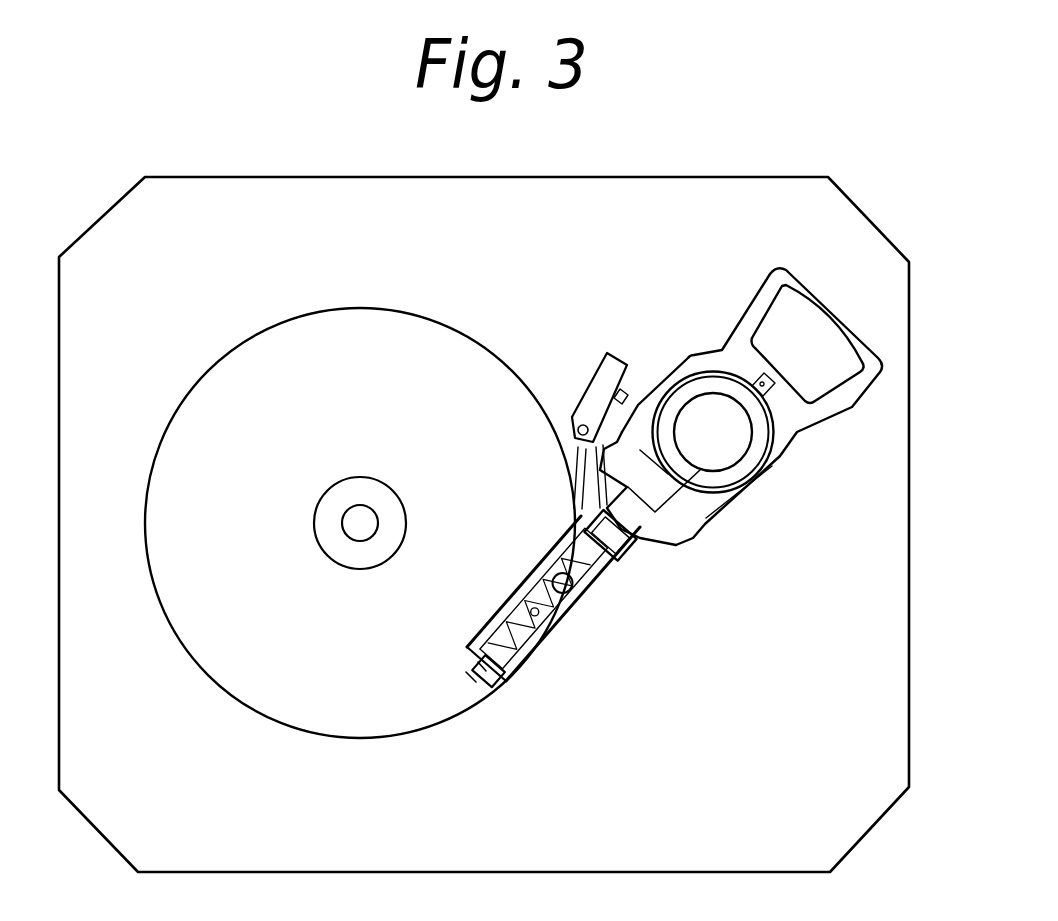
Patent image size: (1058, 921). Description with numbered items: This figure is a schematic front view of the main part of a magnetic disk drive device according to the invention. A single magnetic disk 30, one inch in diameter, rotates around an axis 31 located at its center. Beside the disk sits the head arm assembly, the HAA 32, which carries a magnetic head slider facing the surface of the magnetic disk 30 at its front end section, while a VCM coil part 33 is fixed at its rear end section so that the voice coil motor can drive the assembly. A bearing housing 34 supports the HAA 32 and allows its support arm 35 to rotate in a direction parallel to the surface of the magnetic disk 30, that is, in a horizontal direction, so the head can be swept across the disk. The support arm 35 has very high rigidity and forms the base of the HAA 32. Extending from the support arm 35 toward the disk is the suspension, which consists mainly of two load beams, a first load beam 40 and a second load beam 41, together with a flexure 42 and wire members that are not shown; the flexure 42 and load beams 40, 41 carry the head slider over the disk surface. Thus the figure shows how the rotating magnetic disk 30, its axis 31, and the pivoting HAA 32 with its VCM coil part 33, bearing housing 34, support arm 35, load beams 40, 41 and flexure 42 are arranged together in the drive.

The magnetic disk 30 is at (252, 368).
The axis 31 is at (360, 533).
The HAA 32 is at (657, 332).
The VCM coil part 33 is at (843, 393).
The bearing housing 34 is at (722, 455).
The support arm 35 is at (660, 495).
The first load beam 40 is at (573, 583).
The second load beam 41 is at (593, 547).
The flexure 42 is at (504, 667).